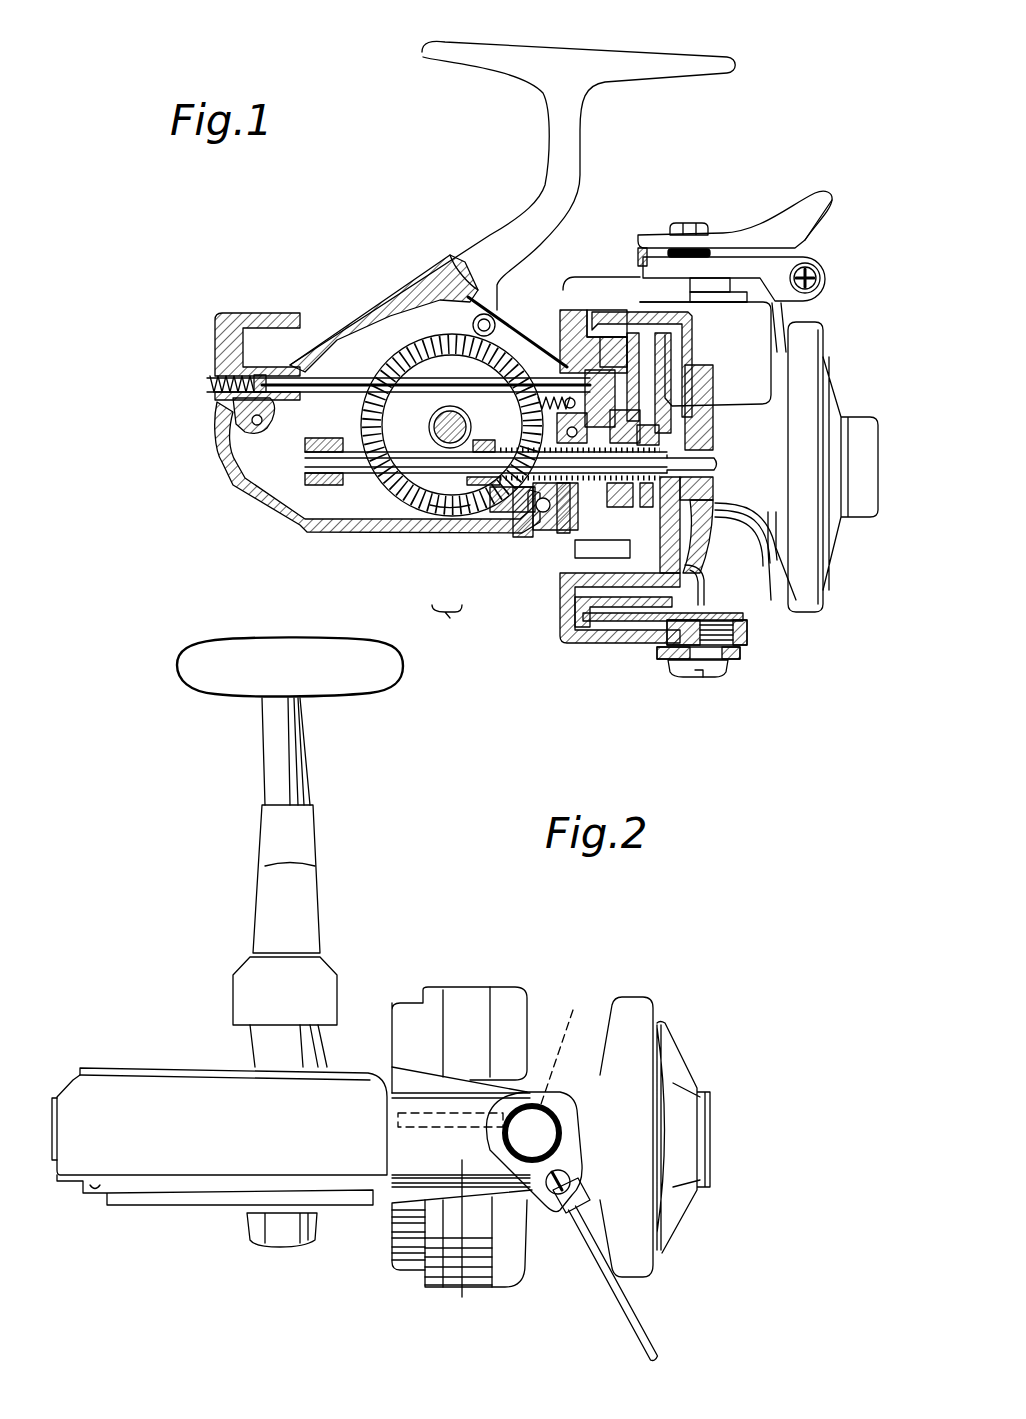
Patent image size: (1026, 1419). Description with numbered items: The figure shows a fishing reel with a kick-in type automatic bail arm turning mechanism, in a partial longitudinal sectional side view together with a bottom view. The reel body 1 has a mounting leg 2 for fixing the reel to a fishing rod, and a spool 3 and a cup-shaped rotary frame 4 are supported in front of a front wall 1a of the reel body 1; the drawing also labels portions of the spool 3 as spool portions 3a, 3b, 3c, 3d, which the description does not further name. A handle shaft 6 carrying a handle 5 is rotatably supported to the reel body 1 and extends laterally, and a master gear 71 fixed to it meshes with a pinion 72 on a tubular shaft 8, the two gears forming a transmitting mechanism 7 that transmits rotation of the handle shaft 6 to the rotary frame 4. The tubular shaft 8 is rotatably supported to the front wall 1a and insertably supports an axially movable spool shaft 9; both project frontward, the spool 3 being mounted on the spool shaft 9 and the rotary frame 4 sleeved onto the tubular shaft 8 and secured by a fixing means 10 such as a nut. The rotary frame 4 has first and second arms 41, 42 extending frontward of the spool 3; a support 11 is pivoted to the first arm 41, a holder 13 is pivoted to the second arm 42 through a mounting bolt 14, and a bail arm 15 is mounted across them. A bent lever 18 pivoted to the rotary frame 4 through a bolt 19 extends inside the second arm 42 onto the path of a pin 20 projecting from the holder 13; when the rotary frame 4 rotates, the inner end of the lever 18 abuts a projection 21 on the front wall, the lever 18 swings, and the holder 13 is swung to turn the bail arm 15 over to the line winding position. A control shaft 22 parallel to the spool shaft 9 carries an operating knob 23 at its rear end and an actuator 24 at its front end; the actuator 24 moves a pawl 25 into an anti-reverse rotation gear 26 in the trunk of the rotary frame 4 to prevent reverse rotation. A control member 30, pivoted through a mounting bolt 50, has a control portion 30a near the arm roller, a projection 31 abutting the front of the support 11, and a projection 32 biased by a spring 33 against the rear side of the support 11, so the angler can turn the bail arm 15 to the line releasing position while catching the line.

In FIG. 1, the reel body 1 is at (380, 535).
In FIG. 2, the reel body 1 is at (175, 1210).
In FIG. 1, the front wall 1a is at (560, 533).
In FIG. 1, the mounting leg 2 is at (633, 52).
In FIG. 1, the spool 3 is at (812, 598).
In FIG. 2, the spool 3 is at (643, 1020).
In FIG. 1, the spool skirt 3a is at (716, 490).
In FIG. 1, the spool front flange 3b is at (820, 333).
In FIG. 1, the spool bracket 3c is at (700, 600).
In FIG. 1, the spool rear portion 3d is at (630, 640).
In FIG. 1, the rotary frame 4 is at (557, 337).
In FIG. 2, the rotary frame 4 is at (408, 1005).
In FIG. 2, the handle 5 is at (403, 666).
In FIG. 1, the handle shaft 6 is at (447, 440).
In FIG. 1, the transmitting mechanism 7 is at (447, 626).
In FIG. 1, the master gear 71 is at (452, 514).
In FIG. 1, the pinion 72 is at (500, 512).
In FIG. 1, the tubular shaft 8 is at (528, 500).
In FIG. 1, the spool shaft 9 is at (363, 458).
In FIG. 1, the fixing means 10 is at (660, 437).
In FIG. 1, the support 11 is at (814, 262).
In FIG. 1, the holder 13 is at (735, 662).
In FIG. 2, the holder 13 is at (567, 1115).
In FIG. 1, the mounting bolt 14 is at (688, 668).
In FIG. 2, the mounting bolt 14 is at (522, 1120).
In FIG. 1, the bail arm 15 is at (784, 312).
In FIG. 2, the bail arm 15 is at (612, 1287).
In FIG. 1, the lever 18 is at (562, 612).
In FIG. 1, the bolt 19 is at (565, 592).
In FIG. 2, the pin 20 is at (569, 1044).
In FIG. 1, the projection 21 is at (597, 540).
In FIG. 1, the control shaft 22 is at (342, 378).
In FIG. 1, the operating knob 23 is at (265, 313).
In FIG. 1, the actuator 24 is at (610, 373).
In FIG. 1, the pawl 25 is at (617, 390).
In FIG. 1, the anti-reverse rotation gear 26 is at (633, 427).
In FIG. 1, the control member 30 is at (737, 236).
In FIG. 1, the control portion 30a is at (822, 194).
In FIG. 1, the projection 31 is at (757, 257).
In FIG. 1, the projection 32 is at (638, 252).
In FIG. 2, the projection 32 is at (418, 1125).
In FIG. 1, the spring 33 is at (704, 249).
In FIG. 1, the first arm 41 is at (597, 290).
In FIG. 1, the second arm 42 is at (747, 633).
In FIG. 2, the second arm 42 is at (462, 1280).
In FIG. 1, the mounting bolt 50 is at (683, 224).